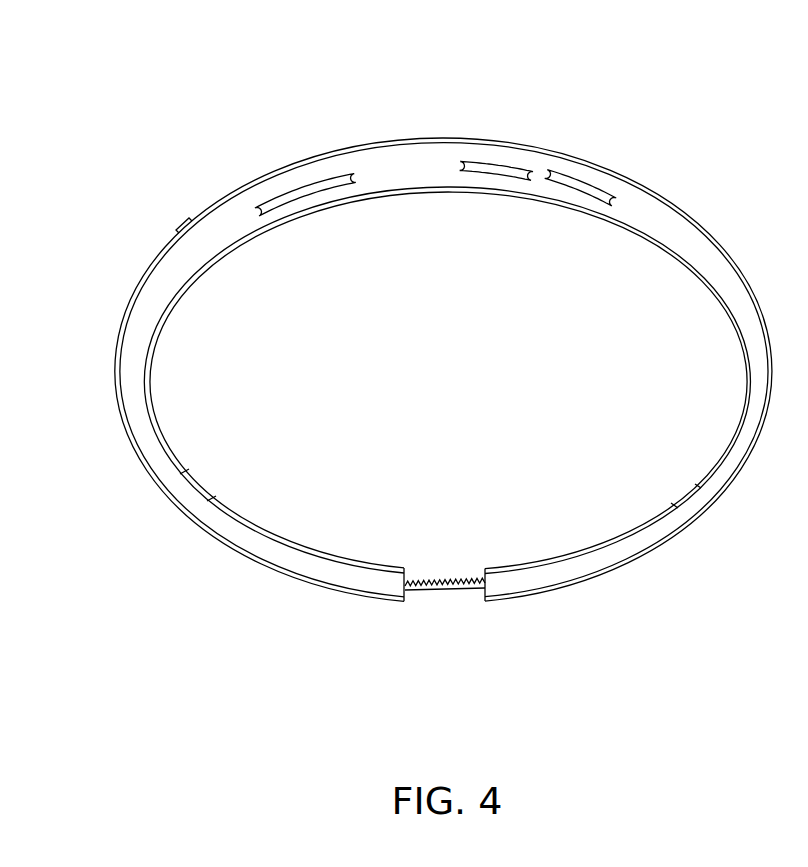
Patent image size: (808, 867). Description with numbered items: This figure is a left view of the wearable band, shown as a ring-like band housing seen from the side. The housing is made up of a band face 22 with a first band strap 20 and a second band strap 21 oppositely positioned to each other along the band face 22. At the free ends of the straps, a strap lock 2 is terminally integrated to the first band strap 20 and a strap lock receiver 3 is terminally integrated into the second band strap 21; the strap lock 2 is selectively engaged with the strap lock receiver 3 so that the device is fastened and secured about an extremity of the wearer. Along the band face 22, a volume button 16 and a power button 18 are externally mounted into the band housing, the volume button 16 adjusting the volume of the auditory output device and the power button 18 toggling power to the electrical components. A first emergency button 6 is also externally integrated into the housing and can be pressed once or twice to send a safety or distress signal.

The band face 22 is at (492, 139).
The first emergency button 6 is at (181, 223).
The power button 18 is at (307, 188).
The volume button 16 is at (518, 172).
The second band strap 21 is at (212, 518).
The first band strap 20 is at (661, 530).
The strap lock 2 is at (457, 588).
The strap lock receiver 3 is at (407, 577).